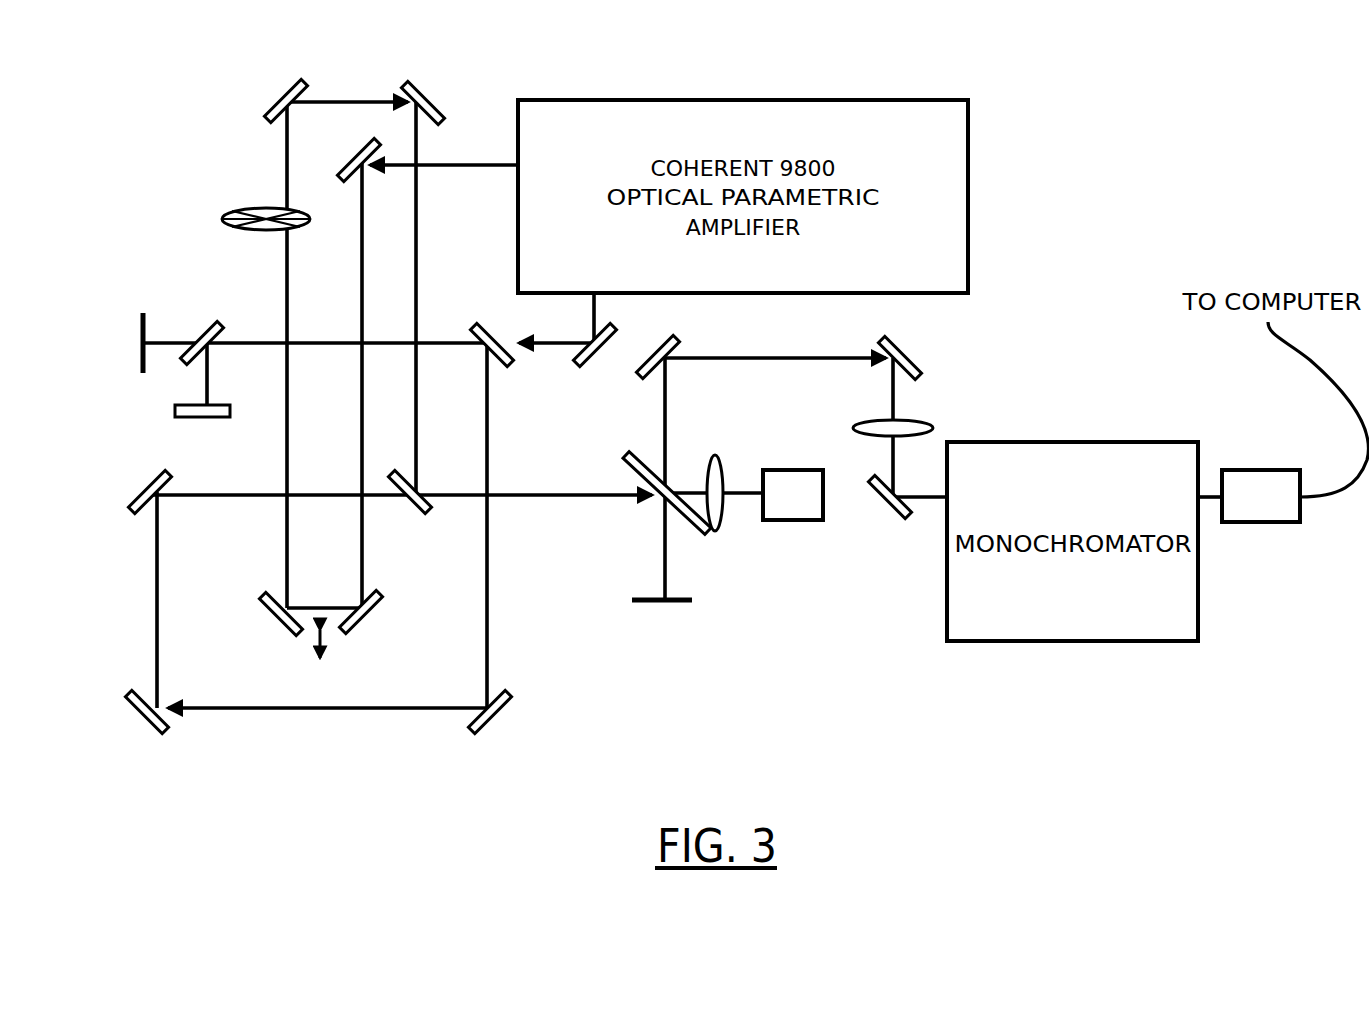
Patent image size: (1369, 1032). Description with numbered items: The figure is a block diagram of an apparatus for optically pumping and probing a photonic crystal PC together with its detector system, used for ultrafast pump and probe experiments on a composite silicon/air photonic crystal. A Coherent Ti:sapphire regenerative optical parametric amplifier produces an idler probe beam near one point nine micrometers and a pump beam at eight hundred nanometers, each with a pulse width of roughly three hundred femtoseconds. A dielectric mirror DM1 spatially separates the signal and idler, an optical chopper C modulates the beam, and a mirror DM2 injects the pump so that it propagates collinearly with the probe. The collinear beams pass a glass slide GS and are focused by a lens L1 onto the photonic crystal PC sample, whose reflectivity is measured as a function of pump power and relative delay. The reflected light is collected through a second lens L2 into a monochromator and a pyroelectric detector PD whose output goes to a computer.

The optical chopper C is at (248, 218).
The dielectric mirror DM1 is at (202, 352).
The mirror DM2 is at (417, 511).
The glass slide GS is at (666, 493).
The lens L1 is at (719, 511).
The photonic crystal PC is at (793, 516).
The lens L2 is at (878, 429).
The pyroelectric detector PD is at (1261, 514).